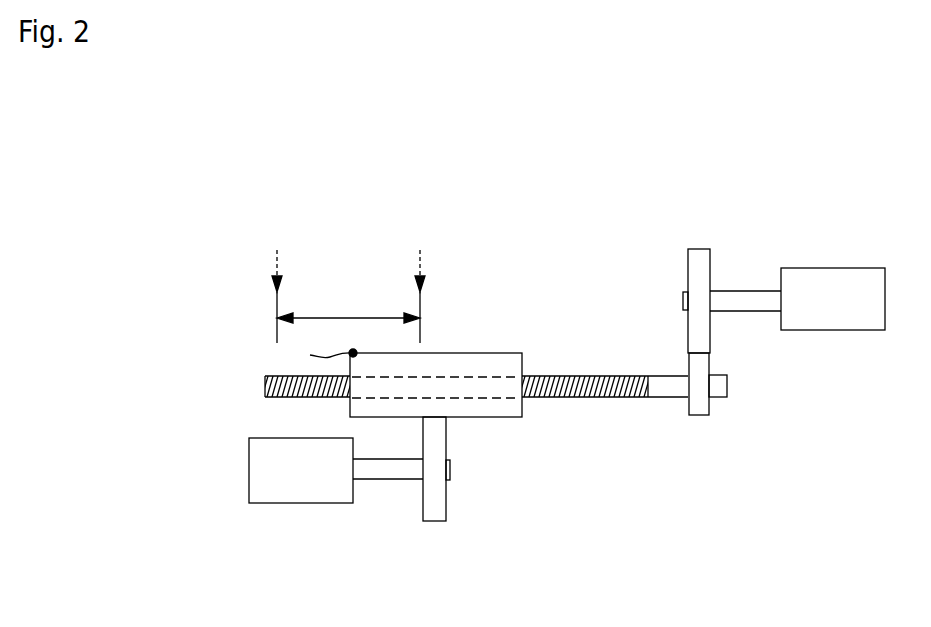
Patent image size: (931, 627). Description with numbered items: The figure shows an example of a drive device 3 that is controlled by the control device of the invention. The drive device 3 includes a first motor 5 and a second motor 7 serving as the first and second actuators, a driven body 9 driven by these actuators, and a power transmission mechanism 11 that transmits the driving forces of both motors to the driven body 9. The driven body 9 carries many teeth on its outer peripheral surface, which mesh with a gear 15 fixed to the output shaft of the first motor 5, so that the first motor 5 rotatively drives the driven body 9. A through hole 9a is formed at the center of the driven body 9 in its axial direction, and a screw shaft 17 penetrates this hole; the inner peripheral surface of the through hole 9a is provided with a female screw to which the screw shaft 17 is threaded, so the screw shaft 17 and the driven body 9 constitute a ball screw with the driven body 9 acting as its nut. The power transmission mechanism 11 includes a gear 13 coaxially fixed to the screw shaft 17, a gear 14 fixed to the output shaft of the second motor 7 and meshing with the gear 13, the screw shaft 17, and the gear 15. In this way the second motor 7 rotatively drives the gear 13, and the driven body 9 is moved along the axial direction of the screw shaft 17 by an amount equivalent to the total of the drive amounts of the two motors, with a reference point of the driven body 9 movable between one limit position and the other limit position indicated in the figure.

The drive device 3 is at (170, 225).
The first motor 5 is at (302, 488).
The second motor 7 is at (828, 282).
The driven body 9 is at (473, 363).
The through hole 9a is at (487, 396).
The power transmission mechanism 11 is at (693, 550).
The gear 13 is at (700, 410).
The gear 14 is at (692, 333).
The gear 15 is at (435, 499).
The screw shaft 17 is at (560, 398).